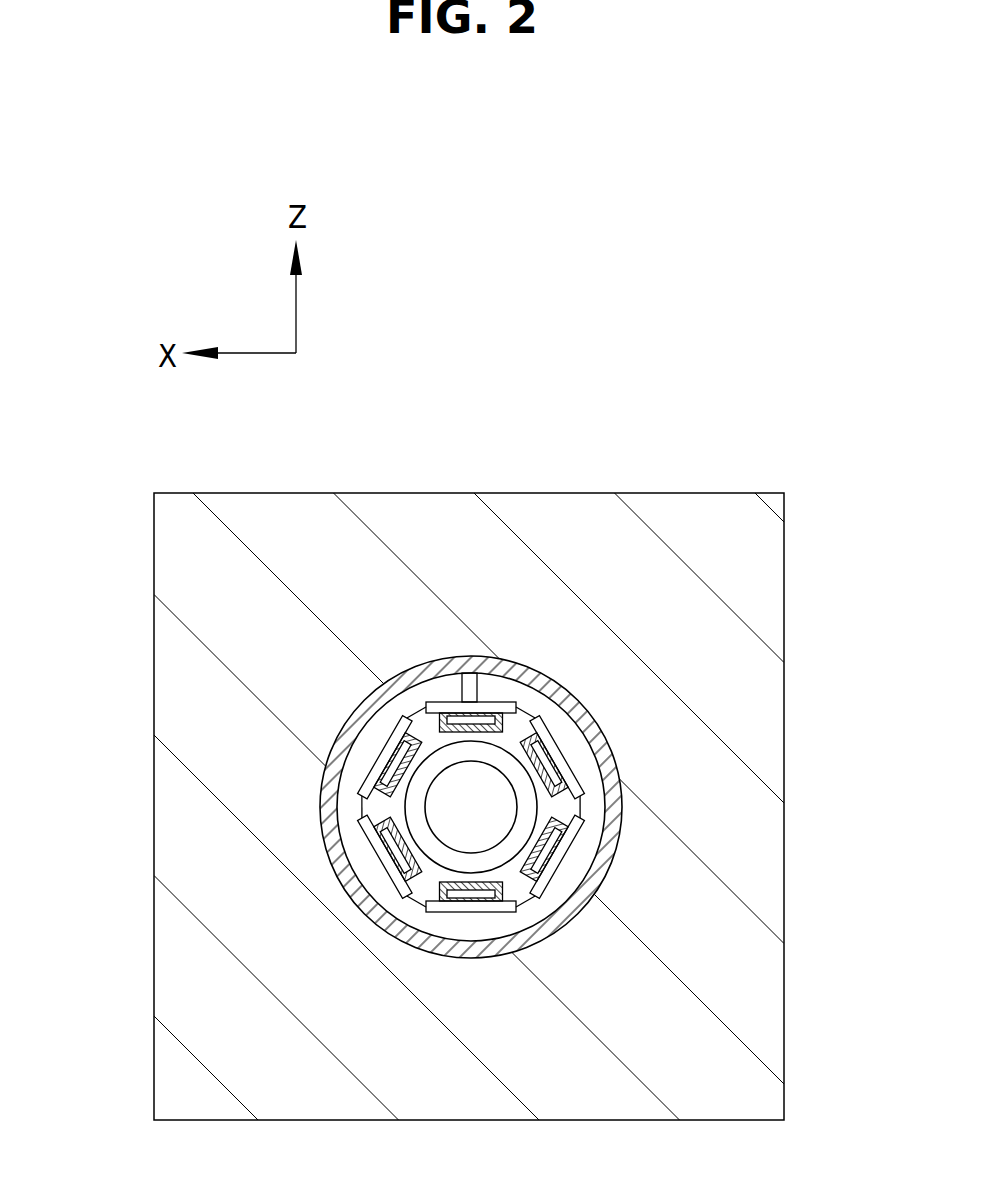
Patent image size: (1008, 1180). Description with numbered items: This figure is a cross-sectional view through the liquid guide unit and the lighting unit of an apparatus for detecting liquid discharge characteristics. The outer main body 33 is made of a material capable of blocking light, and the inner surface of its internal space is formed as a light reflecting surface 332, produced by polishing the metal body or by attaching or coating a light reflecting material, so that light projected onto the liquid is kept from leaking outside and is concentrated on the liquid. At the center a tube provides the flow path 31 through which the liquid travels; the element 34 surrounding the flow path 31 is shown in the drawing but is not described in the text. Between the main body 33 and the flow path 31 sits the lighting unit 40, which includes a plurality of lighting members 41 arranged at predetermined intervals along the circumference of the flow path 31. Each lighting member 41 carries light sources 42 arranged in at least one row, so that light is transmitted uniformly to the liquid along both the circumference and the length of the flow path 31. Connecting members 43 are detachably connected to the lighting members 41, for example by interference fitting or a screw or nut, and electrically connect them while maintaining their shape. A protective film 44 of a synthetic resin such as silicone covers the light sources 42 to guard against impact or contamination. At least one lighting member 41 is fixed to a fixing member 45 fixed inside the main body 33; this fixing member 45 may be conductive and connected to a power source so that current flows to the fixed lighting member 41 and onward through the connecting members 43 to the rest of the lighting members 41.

The flow path 31 is at (466, 819).
The main body 33 is at (258, 525).
The light reflecting surface 332 is at (400, 680).
The rotor 34 is at (417, 800).
The lighting unit 40 is at (607, 736).
The lighting member 41 is at (552, 748).
The light source 42 is at (553, 773).
The connecting member 43 is at (525, 903).
The protective film 44 is at (553, 787).
The fixing member 45 is at (472, 687).